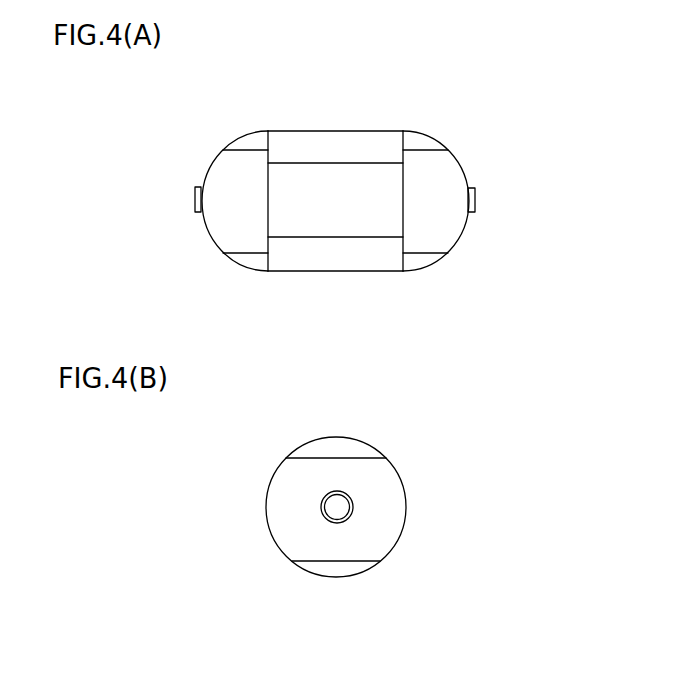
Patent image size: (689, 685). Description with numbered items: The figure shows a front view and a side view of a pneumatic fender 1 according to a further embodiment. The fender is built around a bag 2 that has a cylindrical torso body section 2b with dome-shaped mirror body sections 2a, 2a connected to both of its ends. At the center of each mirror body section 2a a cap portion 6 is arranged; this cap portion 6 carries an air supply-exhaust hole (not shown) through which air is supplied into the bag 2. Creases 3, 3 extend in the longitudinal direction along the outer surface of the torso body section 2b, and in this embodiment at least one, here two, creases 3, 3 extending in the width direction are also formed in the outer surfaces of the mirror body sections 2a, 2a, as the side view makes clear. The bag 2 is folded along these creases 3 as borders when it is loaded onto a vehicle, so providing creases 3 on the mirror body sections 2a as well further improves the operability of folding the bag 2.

In FIG. 4A, the pneumatic fender 1 is at (418, 112).
In FIG. 4B, the pneumatic fender 1 is at (365, 433).
In FIG. 4A, the bag 2 is at (225, 262).
In FIG. 4A, the dome-shaped mirror body section 2a is at (228, 172).
In FIG. 4B, the dome-shaped mirror body section 2a is at (287, 488).
In FIG. 4A, the cylindrical torso body section 2b is at (300, 144).
In FIG. 4A, the crease 3 is at (359, 163).
In FIG. 4B, the crease 3 is at (369, 457).
In FIG. 4A, the cap portion 6 is at (196, 207).
In FIG. 4B, the cap portion 6 is at (332, 513).